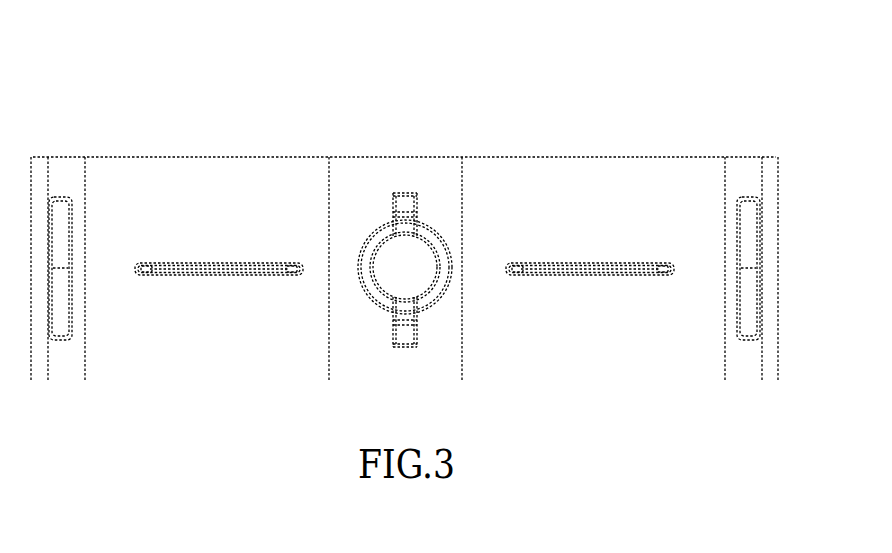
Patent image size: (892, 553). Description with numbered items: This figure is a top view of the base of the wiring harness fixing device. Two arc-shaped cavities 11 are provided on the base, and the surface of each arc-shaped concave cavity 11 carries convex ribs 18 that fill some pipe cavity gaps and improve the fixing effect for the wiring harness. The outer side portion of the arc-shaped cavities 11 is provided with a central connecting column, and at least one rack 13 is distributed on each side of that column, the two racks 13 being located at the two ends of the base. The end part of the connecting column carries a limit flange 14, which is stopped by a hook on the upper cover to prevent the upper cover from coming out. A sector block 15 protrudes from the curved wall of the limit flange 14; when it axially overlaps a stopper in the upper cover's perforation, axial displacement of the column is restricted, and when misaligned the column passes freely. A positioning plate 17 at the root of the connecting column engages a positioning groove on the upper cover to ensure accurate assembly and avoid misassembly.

The arc-shaped cavity 11 is at (404, 199).
The rack 13 is at (445, 178).
The limit flange 14 is at (370, 159).
The sector block 15 is at (466, 165).
The positioning plate 17 is at (435, 181).
The convex rib 18 is at (406, 145).